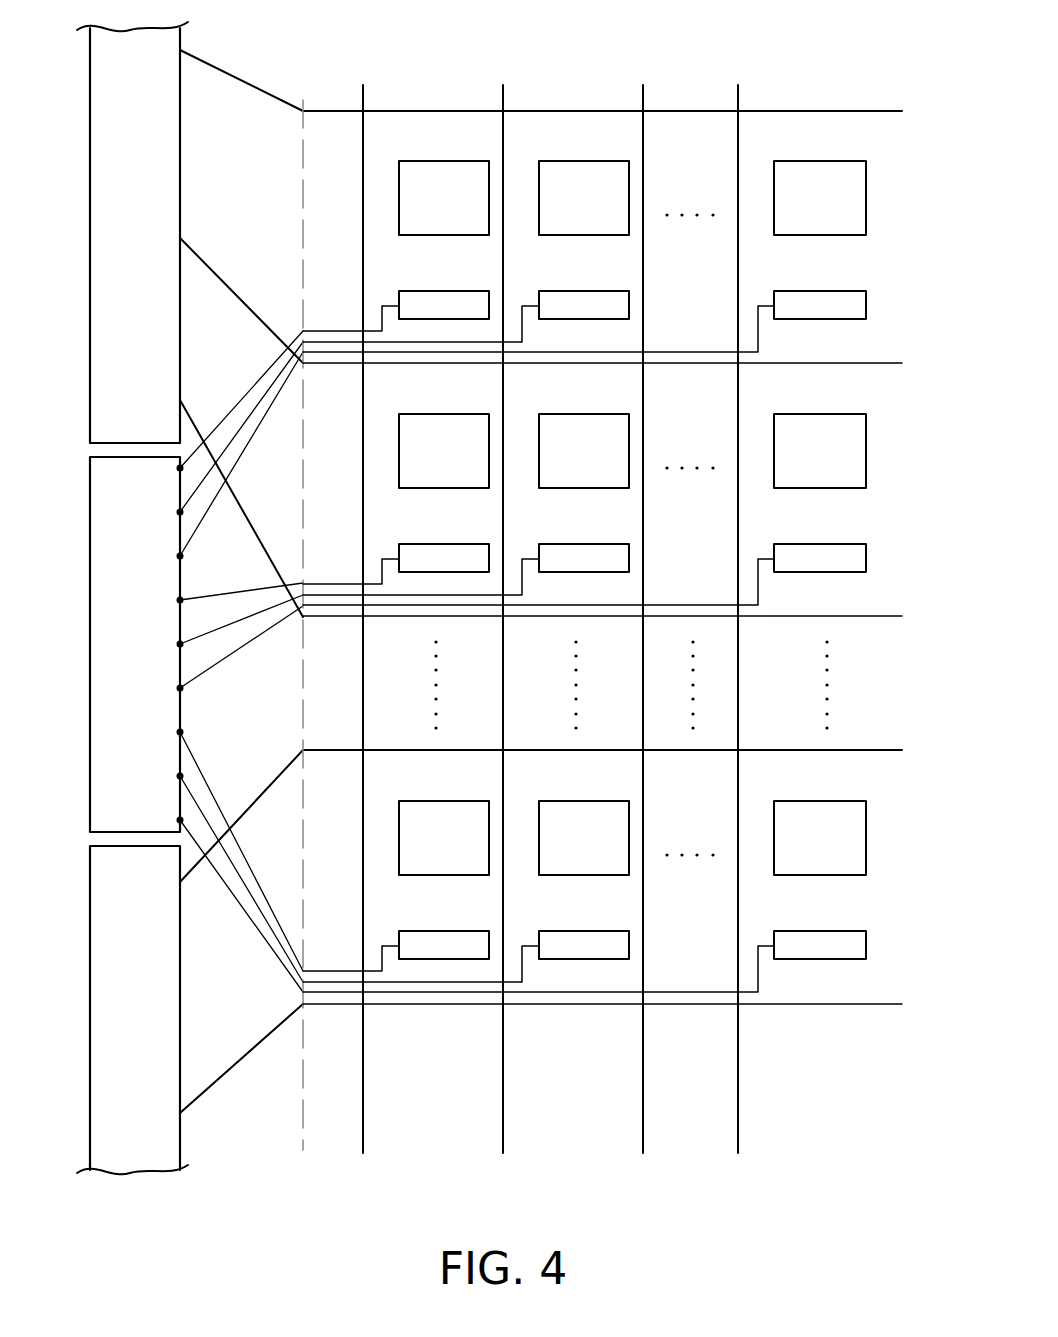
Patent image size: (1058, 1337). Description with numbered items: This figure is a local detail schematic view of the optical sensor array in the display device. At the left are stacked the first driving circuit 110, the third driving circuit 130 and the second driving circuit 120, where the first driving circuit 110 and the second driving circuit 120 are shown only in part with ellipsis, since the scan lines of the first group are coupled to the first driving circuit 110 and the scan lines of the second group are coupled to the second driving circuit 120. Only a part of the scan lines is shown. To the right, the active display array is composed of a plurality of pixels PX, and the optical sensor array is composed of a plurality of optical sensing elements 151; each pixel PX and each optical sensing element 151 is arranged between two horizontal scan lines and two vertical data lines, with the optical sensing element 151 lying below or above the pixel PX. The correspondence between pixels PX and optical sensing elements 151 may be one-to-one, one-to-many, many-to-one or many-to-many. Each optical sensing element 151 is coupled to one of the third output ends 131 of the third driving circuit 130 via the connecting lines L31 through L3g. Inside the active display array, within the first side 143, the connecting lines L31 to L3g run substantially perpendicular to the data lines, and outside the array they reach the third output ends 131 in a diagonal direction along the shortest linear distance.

The first driving circuit 110 is at (90, 258).
The second driving circuit 120 is at (90, 1033).
The third driving circuit 130 is at (90, 523).
The third output ends 131 is at (164, 468).
The first side 143 is at (303, 100).
The optical sensing element 151 is at (443, 291).
The pixel PX is at (443, 161).
The connecting line L31 is at (240, 402).
The connecting line L3g is at (234, 893).